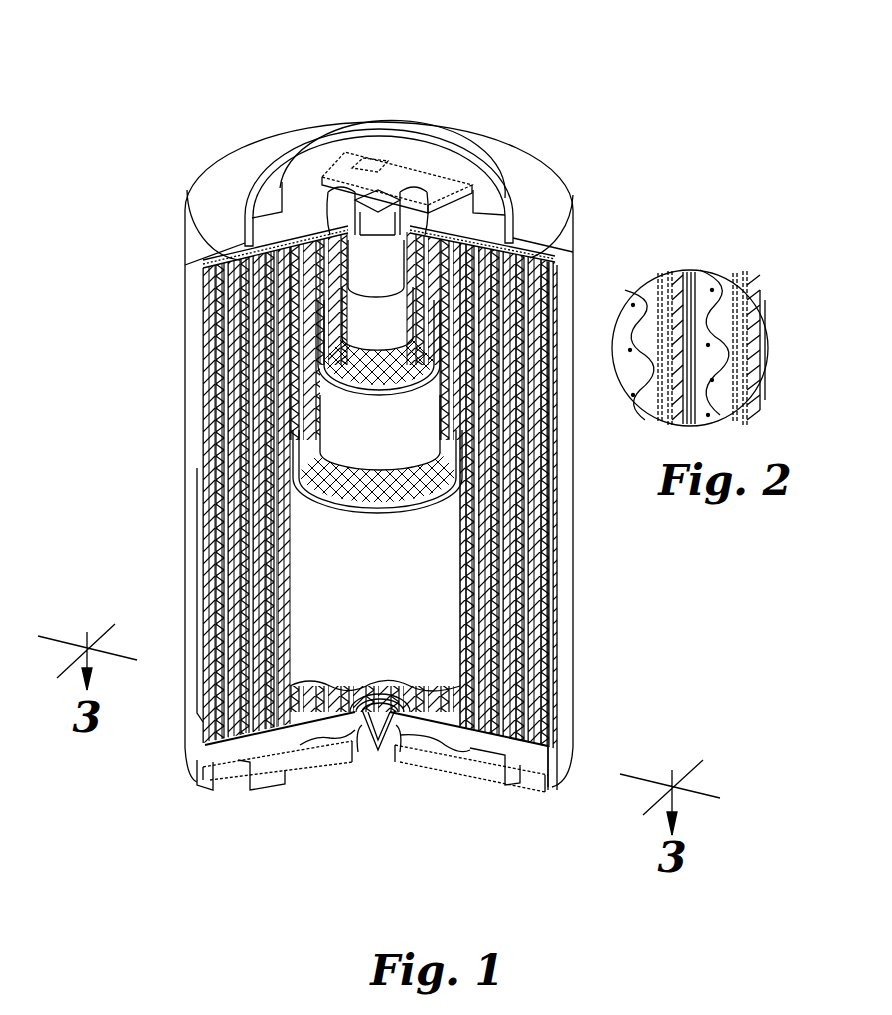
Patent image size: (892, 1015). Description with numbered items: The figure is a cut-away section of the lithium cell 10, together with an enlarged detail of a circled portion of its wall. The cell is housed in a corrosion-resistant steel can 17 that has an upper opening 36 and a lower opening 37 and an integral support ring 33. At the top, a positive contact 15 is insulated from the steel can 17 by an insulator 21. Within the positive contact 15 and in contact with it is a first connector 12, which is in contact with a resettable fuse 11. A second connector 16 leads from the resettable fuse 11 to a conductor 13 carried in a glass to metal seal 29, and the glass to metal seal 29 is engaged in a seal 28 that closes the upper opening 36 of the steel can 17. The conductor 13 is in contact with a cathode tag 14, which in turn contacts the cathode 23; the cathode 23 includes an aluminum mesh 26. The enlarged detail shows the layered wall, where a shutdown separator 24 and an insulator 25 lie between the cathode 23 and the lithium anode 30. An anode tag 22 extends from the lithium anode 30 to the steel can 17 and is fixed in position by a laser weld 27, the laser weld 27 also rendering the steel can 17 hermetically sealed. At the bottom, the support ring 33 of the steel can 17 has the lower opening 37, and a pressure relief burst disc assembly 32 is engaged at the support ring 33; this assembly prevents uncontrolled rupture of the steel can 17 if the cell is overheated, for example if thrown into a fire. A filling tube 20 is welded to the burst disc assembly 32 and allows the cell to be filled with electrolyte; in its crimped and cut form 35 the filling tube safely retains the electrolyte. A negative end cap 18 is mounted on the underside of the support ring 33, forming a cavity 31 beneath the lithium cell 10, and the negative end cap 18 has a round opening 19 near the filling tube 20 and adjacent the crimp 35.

In FIG. 1, the lithium cell 10 is at (150, 412).
In FIG. 1, the resettable fuse 11 is at (445, 152).
In FIG. 1, the first connector 12 is at (386, 160).
In FIG. 1, the conductor 13 is at (302, 165).
In FIG. 1, the cathode tag 14 is at (305, 250).
In FIG. 1, the positive contact 15 is at (420, 180).
In FIG. 1, the second connector 16 is at (347, 165).
In FIG. 1, the steel can 17 is at (563, 622).
In FIG. 1, the negative end cap 18 is at (455, 770).
In FIG. 1, the round opening 19 is at (362, 755).
In FIG. 1, the filling tube 20 is at (395, 745).
In FIG. 1, the insulator 21 is at (245, 200).
In FIG. 1, the anode tag 22 is at (195, 770).
In FIG. 1, the cathode 23 is at (345, 278).
In FIG. 2, the cathode 23 is at (735, 352).
In FIG. 2, the shutdown separator 24 is at (686, 290).
In FIG. 2, the insulator 25 is at (722, 320).
In FIG. 1, the aluminum mesh 26 is at (400, 355).
In FIG. 1, the laser weld 27 is at (548, 770).
In FIG. 1, the seal 28 is at (420, 200).
In FIG. 1, the glass to metal seal 29 is at (480, 175).
In FIG. 1, the lithium anode 30 is at (468, 262).
In FIG. 2, the lithium anode 30 is at (700, 332).
In FIG. 1, the cavity 31 is at (450, 770).
In FIG. 1, the burst disc assembly 32 is at (335, 740).
In FIG. 1, the support ring 33 is at (480, 755).
In FIG. 1, the crimped and cut filling tube 35 is at (380, 755).
In FIG. 1, the upper opening 36 is at (350, 208).
In FIG. 1, the lower opening 37 is at (300, 762).